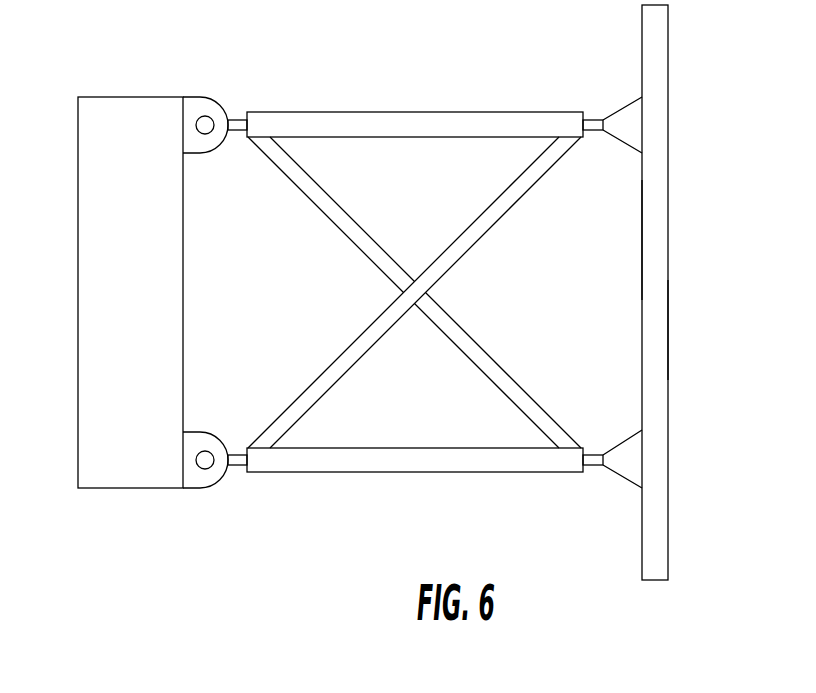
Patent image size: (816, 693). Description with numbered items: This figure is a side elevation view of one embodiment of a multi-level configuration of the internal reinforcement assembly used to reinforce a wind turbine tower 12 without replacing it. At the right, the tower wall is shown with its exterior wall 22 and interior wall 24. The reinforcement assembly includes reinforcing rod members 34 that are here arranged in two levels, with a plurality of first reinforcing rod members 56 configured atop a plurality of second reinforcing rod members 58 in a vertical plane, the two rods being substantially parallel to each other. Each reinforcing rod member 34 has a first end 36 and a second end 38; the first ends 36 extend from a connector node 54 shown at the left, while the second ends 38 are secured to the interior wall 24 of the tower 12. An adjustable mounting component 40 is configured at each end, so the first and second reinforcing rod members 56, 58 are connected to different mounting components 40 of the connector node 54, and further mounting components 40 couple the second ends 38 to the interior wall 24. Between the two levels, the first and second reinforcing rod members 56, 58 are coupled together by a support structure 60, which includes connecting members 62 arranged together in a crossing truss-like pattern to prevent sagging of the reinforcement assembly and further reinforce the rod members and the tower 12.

The wind turbine tower 12 is at (670, 55).
The exterior wall 22 is at (669, 333).
The interior wall 24 is at (641, 243).
The reinforcing rod members 34 is at (315, 110).
The first end 36 is at (265, 111).
The second end 38 is at (566, 111).
The adjustable mounting component 40 is at (200, 89).
The connector node 54 is at (113, 96).
The first reinforcing rod members 56 is at (423, 118).
The second reinforcing rod members 58 is at (426, 473).
The support structure 60 is at (325, 282).
The connecting members 62 is at (471, 248).